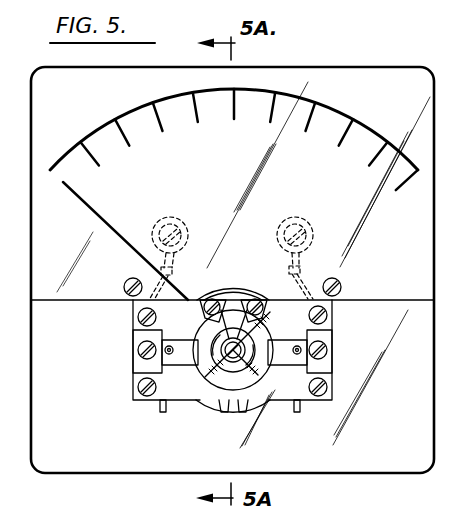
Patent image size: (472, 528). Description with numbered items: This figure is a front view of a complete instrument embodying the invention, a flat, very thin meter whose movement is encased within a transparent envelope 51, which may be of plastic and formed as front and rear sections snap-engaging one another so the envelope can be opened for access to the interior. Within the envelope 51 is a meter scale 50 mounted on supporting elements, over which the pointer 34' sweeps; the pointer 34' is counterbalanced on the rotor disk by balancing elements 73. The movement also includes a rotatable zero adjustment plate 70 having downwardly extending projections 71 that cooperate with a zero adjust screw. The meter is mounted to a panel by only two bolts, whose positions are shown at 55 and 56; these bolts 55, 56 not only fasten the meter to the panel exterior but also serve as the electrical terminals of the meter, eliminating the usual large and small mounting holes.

The meter scale 50 is at (352, 117).
The transparent envelope 51 is at (412, 374).
The pointer 34' is at (125, 241).
The bolt 55 is at (290, 218).
The bolt 56 is at (184, 224).
The rotatable zero adjustment plate 70 is at (253, 408).
The downwardly extending projections 71 is at (232, 413).
The balancing elements 73 is at (262, 326).